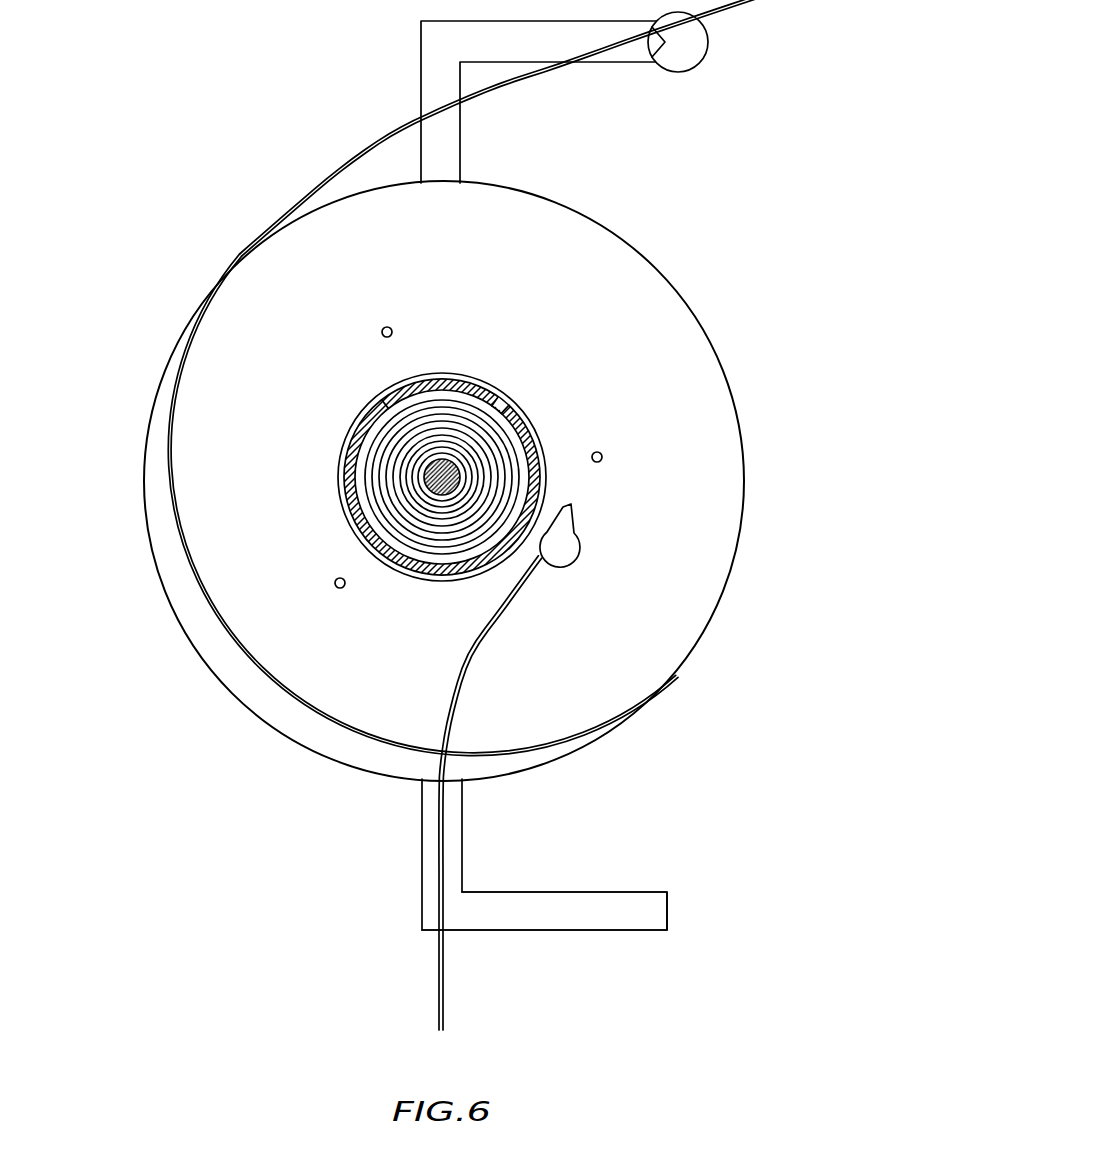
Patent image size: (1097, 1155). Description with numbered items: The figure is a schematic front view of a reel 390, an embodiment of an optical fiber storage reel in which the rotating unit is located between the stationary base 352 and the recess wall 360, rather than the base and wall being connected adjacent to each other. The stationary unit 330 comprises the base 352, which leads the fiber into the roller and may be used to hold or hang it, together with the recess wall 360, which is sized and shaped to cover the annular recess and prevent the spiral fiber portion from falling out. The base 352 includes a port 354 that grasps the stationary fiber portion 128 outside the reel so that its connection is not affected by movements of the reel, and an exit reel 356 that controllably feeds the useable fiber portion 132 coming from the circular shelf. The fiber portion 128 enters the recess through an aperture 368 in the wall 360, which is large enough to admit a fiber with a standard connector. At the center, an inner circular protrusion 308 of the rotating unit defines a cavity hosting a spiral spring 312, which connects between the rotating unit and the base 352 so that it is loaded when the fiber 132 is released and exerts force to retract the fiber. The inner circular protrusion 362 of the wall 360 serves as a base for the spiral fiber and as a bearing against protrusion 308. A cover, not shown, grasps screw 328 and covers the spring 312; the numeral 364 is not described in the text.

The stationary fiber portion 128 is at (452, 733).
The useable fiber portion 132 is at (500, 82).
The inner circular protrusion 308 is at (448, 463).
The spiral spring 312 is at (547, 446).
The screw 328 is at (433, 468).
The stationary unit 330 is at (180, 133).
The stationary base 352 is at (421, 52).
The port 354 is at (545, 932).
The exit reel 356 is at (708, 41).
The recess wall 360 is at (160, 522).
The inner circular protrusion 362 is at (502, 404).
The fastener 364 is at (384, 329).
The aperture 368 is at (578, 542).
The reel 390 is at (712, 254).